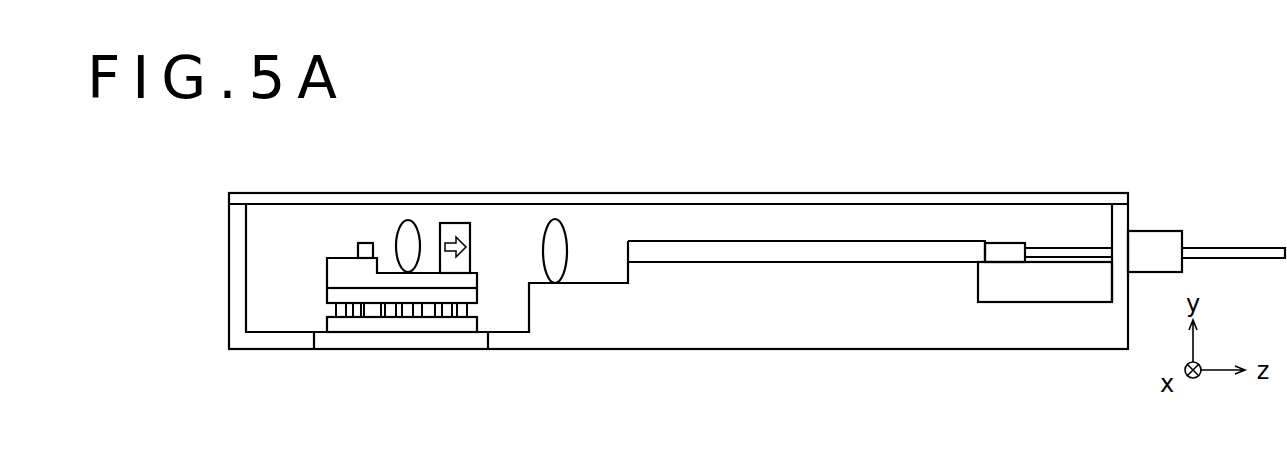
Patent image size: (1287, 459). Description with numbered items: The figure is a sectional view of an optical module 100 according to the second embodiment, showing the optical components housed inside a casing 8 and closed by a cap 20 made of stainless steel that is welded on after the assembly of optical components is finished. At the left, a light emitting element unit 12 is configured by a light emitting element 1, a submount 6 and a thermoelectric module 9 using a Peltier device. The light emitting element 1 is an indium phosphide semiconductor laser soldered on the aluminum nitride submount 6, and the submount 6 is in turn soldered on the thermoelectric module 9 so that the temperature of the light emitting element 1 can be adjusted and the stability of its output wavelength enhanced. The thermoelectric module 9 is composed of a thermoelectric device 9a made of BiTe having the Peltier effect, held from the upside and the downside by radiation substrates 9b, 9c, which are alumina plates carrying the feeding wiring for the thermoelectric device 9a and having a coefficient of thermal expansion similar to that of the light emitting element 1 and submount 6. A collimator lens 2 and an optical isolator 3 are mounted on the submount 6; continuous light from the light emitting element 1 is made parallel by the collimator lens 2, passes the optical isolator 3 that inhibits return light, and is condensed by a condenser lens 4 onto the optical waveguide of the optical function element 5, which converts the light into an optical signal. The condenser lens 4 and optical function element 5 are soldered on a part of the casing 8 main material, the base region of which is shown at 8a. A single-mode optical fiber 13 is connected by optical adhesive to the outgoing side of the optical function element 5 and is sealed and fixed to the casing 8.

The light emitting element 1 is at (367, 245).
The collimator lens 2 is at (410, 228).
The optical isolator 3 is at (455, 231).
The condenser lens 4 is at (555, 268).
The optical function element 5 is at (745, 252).
The submount 6 is at (435, 278).
The casing 8 is at (851, 330).
The package bottom plate 8a is at (468, 340).
The thermoelectric module 9 is at (317, 288).
The thermoelectric device 9a is at (345, 309).
The substrate for outgoing radiation 9b is at (472, 294).
The substrate for outgoing radiation 9c is at (390, 324).
The light emitting element unit 12 is at (272, 228).
The single-mode optical fiber 13 is at (1073, 252).
The cap 20 is at (1010, 202).
The optical module 100 is at (1188, 156).